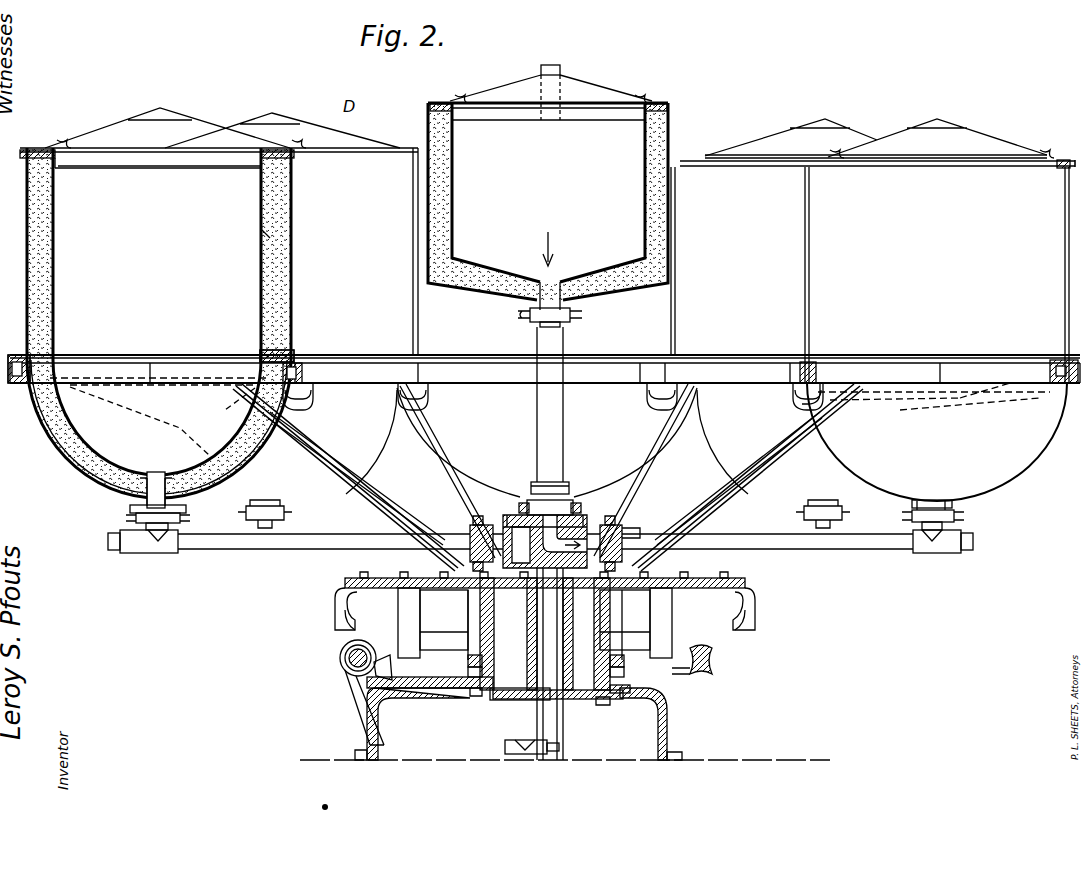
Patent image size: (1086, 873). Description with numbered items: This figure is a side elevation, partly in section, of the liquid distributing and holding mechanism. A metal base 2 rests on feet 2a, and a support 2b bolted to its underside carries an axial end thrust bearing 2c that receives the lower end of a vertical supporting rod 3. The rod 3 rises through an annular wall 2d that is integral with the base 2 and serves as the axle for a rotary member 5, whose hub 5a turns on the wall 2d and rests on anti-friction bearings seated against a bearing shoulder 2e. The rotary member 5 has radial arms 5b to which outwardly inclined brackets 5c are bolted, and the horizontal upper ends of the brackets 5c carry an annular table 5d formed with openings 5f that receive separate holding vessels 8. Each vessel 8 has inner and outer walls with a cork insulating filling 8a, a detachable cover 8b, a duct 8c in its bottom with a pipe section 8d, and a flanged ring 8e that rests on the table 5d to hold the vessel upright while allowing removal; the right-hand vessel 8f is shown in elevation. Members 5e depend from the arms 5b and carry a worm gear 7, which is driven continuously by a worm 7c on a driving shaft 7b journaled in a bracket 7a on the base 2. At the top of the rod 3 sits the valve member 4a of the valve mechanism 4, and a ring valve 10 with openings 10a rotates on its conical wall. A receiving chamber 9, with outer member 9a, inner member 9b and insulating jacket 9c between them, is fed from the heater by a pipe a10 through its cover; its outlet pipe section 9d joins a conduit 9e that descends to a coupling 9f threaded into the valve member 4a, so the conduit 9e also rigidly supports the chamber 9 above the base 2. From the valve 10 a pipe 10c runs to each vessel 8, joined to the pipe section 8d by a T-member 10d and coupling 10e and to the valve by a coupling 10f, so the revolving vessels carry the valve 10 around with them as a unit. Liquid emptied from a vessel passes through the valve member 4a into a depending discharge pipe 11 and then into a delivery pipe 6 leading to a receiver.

The base 2 is at (424, 690).
The feet 2a is at (390, 752).
The support 2b is at (497, 702).
The end thrust bearing 2c is at (528, 699).
The annular wall 2d is at (484, 664).
The bearing shoulder 2e is at (465, 690).
The vertical supporting rod 3 is at (537, 636).
The valve mechanism 4 is at (546, 532).
The valve member 4a is at (512, 572).
The rotary member 5 is at (552, 609).
The hub 5a is at (608, 620).
The arms 5b is at (746, 584).
The brackets 5c is at (335, 572).
The annular table 5d is at (735, 362).
The depending members 5e is at (396, 612).
The openings 5f is at (25, 383).
The delivery pipe 6 is at (523, 754).
The worm gear 7 is at (714, 670).
The bracket 7a is at (352, 702).
The driving shaft 7b is at (346, 658).
The worm 7c is at (341, 648).
The holding vessels 8 is at (291, 285).
The cork 8a is at (280, 240).
The detachable cover 8b is at (173, 166).
The duct 8c is at (152, 480).
The pipe section 8d is at (188, 508).
The flanged ring 8e is at (292, 355).
The right pot 8f is at (873, 314).
The receiving chamber 9 is at (548, 201).
The outer member 9a is at (670, 130).
The inner member 9b is at (648, 150).
The insulating jacket 9c is at (648, 192).
The outlet pipe section 9d is at (558, 292).
The conduit 9e is at (563, 440).
The coupling 9f is at (569, 493).
The valve 10 is at (638, 528).
The openings 10a is at (496, 524).
The pipe 10c is at (882, 550).
The T-member 10d is at (155, 553).
The coupling 10e is at (134, 516).
The coupling 10f is at (465, 532).
The pipe a10 is at (560, 70).
The discharge pipe 11 is at (557, 650).